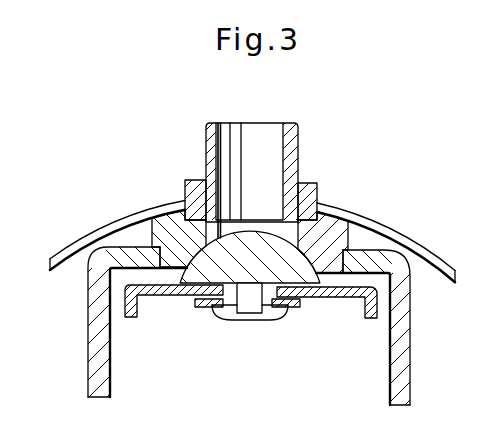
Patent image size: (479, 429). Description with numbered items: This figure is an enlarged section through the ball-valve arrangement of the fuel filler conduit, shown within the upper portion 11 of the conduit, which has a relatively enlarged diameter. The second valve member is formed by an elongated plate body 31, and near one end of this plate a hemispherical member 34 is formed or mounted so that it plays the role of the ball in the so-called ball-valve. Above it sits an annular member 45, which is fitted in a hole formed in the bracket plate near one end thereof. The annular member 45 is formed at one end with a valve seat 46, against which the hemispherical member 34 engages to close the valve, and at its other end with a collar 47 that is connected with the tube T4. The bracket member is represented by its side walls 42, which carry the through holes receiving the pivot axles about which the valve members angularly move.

The upper portion 11 is at (409, 238).
The elongated plate body 31 is at (156, 289).
The hemispherical member 34 is at (292, 268).
The side walls 42 is at (404, 337).
The annular member 45 is at (334, 230).
The valve seat 46 is at (198, 254).
The collar 47 is at (306, 190).
The tube T4 is at (226, 142).